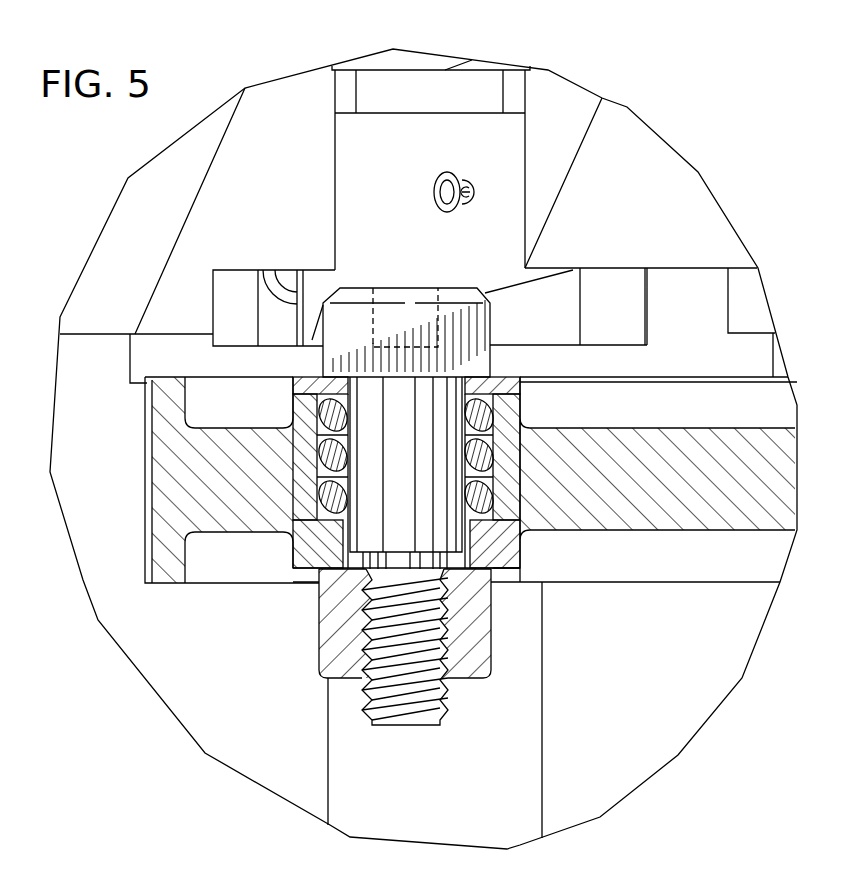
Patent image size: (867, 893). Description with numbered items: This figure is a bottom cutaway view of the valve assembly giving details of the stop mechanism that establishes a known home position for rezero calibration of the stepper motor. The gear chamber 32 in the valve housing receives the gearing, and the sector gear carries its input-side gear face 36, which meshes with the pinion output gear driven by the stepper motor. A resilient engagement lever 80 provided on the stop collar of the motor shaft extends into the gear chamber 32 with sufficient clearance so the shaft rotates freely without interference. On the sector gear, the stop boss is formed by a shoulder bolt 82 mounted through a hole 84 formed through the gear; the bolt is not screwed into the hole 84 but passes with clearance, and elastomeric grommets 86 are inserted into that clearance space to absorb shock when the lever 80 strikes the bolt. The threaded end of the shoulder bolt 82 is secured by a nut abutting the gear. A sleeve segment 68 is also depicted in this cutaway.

The resilient engagement lever 80 is at (423, 123).
The shoulder bolt 82 is at (358, 305).
The hole 84 is at (340, 547).
The sleeve segment 68 is at (320, 435).
The elastomeric grommets 86 is at (320, 458).
The gear face 36 is at (147, 400).
The gear chamber 32 is at (243, 635).